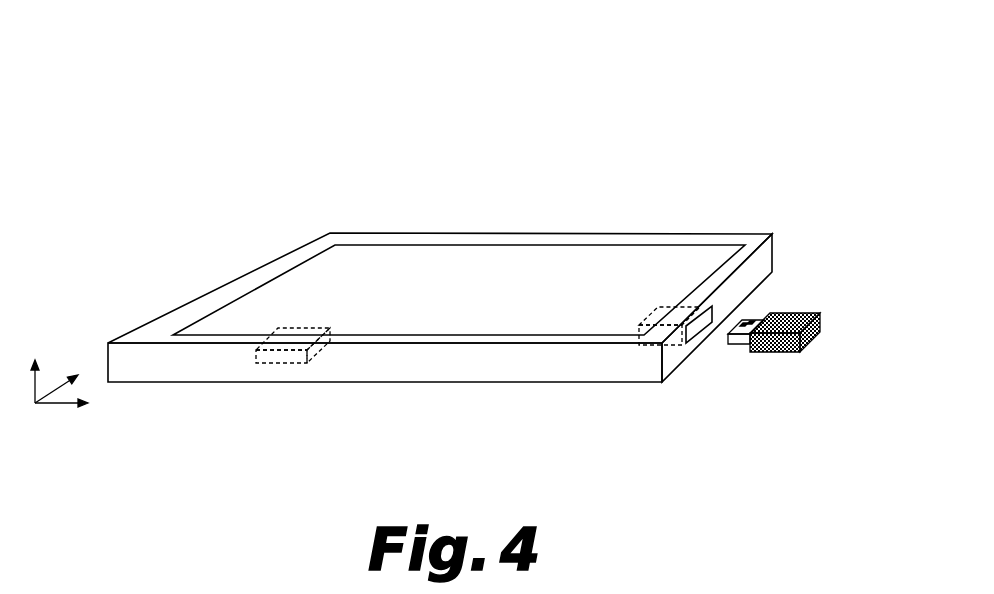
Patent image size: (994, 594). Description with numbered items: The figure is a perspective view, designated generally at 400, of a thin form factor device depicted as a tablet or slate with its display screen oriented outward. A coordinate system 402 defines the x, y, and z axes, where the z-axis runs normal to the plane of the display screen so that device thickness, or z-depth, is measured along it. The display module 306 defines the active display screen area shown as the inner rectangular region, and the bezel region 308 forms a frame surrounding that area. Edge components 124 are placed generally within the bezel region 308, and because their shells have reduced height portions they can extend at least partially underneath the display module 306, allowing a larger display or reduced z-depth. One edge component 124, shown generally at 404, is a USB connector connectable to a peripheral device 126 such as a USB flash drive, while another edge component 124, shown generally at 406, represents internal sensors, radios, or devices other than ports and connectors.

The thin form factor device diagram 400 is at (212, 86).
The display module 306 is at (453, 252).
The bezel region 308 is at (204, 287).
The coordinate system 402 is at (52, 443).
The USB connector edge component 404 is at (676, 294).
The non-port edge component 406 is at (300, 317).
The edge components 124 is at (277, 374).
The peripheral device 126 is at (798, 360).